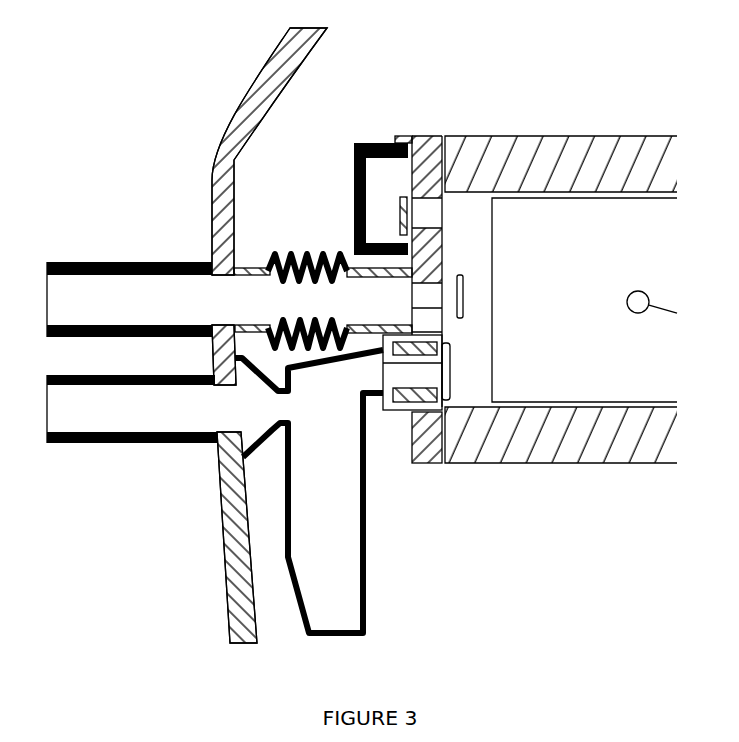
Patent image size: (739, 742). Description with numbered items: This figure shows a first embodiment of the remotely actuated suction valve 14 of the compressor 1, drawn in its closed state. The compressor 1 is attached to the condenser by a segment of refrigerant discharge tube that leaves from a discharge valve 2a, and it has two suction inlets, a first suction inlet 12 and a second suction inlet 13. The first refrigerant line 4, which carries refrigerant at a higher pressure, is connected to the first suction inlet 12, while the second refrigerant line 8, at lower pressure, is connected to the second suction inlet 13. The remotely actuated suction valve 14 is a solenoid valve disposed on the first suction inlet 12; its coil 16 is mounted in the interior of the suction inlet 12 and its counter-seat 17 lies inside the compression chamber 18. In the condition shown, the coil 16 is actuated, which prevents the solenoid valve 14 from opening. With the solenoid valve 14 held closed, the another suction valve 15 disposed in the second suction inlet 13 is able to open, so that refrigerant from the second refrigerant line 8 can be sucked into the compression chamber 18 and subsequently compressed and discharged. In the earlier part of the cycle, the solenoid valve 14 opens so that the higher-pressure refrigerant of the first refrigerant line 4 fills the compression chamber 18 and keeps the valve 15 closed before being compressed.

The compressor 1 is at (600, 137).
The discharge valve 2a is at (398, 215).
The first refrigerant line 4 is at (93, 445).
The second refrigerant line 8 is at (91, 262).
The first suction inlet 12 is at (405, 370).
The second suction inlet 13 is at (412, 292).
The remotely actuated suction valve 14 is at (395, 412).
The suction valve 15 is at (465, 297).
The coil 16 is at (448, 463).
The counter-seat 17 is at (453, 377).
The compression chamber 18 is at (465, 220).